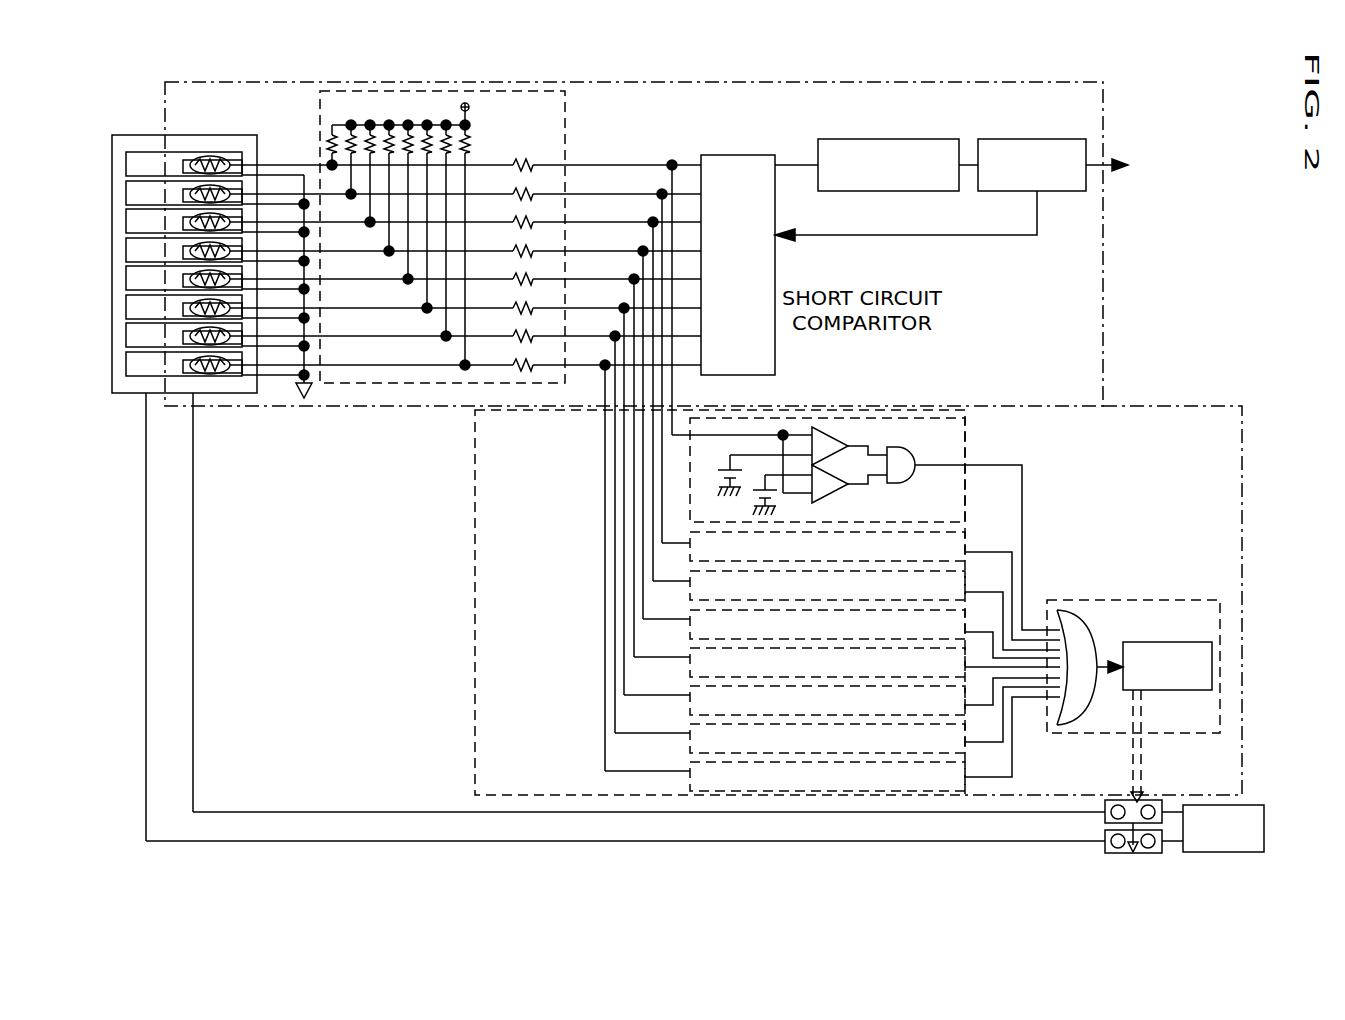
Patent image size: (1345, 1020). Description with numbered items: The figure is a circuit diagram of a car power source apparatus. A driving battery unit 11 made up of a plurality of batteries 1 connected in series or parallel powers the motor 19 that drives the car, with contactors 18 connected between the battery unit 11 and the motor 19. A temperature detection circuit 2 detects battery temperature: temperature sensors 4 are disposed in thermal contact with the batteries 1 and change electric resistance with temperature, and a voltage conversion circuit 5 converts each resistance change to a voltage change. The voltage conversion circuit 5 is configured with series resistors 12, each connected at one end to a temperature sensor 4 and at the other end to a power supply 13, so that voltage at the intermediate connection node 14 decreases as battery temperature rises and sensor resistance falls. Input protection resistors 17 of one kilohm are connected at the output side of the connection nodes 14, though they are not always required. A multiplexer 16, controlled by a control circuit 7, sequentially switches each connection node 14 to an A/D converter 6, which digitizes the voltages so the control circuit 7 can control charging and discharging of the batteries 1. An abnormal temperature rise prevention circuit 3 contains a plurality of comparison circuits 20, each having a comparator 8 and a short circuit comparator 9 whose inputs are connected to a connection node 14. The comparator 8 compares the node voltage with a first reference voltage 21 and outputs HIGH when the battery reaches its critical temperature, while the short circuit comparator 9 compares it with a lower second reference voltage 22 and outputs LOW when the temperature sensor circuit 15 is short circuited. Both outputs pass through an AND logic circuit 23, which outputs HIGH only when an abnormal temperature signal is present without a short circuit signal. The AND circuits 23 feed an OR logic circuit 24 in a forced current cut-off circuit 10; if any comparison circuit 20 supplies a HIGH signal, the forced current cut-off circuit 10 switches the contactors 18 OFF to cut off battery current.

The battery 1 is at (143, 135).
The temperature detection circuit 2 is at (785, 82).
The abnormal temperature rise prevention circuit 3 is at (1180, 406).
The temperature sensor 4 is at (197, 162).
The voltage conversion circuit 5 is at (567, 110).
The A/D converter 6 is at (922, 139).
The control circuit 7 is at (1046, 139).
The comparator 8 is at (825, 462).
The short circuit comparator 9 is at (828, 427).
The forced current cut-off circuit 10 is at (1135, 600).
The driving battery unit 11 is at (138, 165).
The series resistor 12 is at (332, 125).
The power supply 13 is at (470, 106).
The connection node 14 is at (332, 172).
The temperature sensor circuit 15 is at (632, 160).
The multiplexer 16 is at (775, 257).
The input protection resistor 17 is at (533, 188).
The contactor 18 is at (1122, 798).
The motor 19 is at (1228, 805).
The comparison circuit 20 is at (1000, 462).
The first reference voltage 21 is at (765, 488).
The second reference voltage 22 is at (730, 468).
The AND logic circuit 23 is at (918, 455).
The OR logic circuit 24 is at (1100, 640).